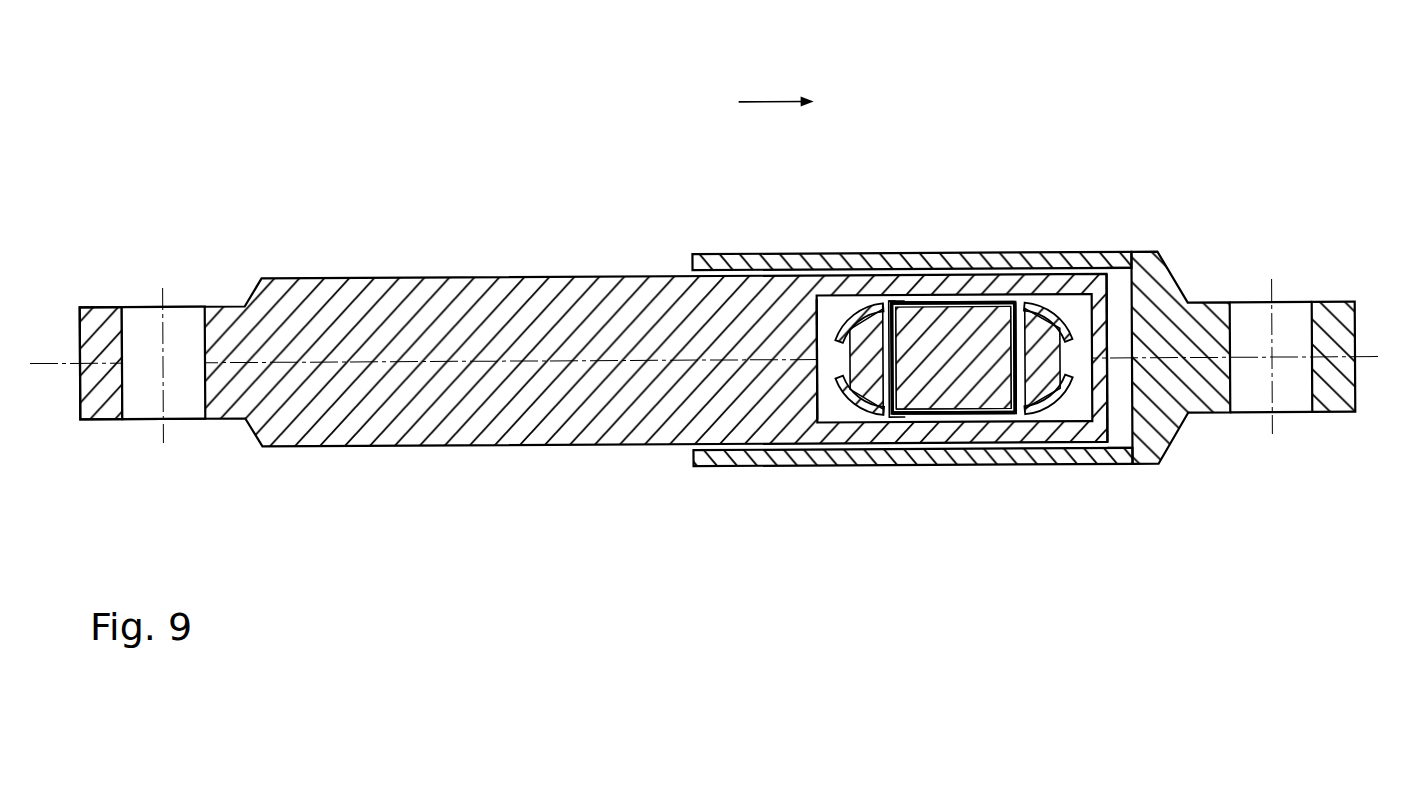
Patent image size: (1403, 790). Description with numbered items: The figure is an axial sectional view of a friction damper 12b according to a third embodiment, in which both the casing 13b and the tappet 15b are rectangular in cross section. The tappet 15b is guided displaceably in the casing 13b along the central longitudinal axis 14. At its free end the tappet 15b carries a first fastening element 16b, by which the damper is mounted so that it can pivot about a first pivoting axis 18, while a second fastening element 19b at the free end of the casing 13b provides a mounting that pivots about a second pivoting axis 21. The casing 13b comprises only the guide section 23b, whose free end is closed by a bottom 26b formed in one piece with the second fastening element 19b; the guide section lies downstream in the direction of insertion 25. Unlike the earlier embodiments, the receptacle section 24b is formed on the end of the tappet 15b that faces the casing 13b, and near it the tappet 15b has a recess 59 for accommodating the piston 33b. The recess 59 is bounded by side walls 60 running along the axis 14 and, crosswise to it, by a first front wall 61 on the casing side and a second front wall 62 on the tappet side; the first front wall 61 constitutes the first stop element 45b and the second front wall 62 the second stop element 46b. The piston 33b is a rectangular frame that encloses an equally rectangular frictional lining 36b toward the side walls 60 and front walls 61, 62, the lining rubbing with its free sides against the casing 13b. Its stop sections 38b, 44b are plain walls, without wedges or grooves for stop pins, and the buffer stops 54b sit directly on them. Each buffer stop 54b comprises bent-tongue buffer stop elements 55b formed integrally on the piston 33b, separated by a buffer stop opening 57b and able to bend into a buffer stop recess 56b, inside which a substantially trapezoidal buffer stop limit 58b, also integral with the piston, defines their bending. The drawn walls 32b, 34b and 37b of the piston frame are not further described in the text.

The friction damper 12b is at (706, 306).
The casing 13b is at (882, 254).
The central longitudinal axis 14 is at (307, 362).
The tappet 15b is at (420, 313).
The first fastening element 16b is at (98, 307).
The first pivoting axis 18 is at (163, 389).
The second fastening element 19b is at (1338, 307).
The second pivoting axis 21 is at (1272, 326).
The guide section 23b is at (947, 290).
The receptacle section 24b is at (885, 412).
The direction of insertion 25 is at (783, 100).
The bottom 26b is at (1138, 302).
The upper wall 32b is at (1020, 288).
The piston 33b is at (922, 302).
The lower wall 34b is at (978, 418).
The frictional lining 36b is at (934, 405).
The side wall 37b is at (882, 425).
The stop section 38b is at (1052, 420).
The stop section 44b is at (882, 300).
The first stop element 45b is at (1107, 367).
The second stop element 46b is at (815, 347).
The buffer stop 54b is at (859, 368).
The buffer stop element 55b is at (953, 354).
The buffer stop recess 56b is at (852, 308).
The buffer stop opening 57b is at (828, 404).
The buffer stop limit 58b is at (876, 397).
The recess 59 is at (888, 300).
The side walls 60 is at (926, 416).
The first front wall 61 is at (1166, 294).
The second front wall 62 is at (814, 318).